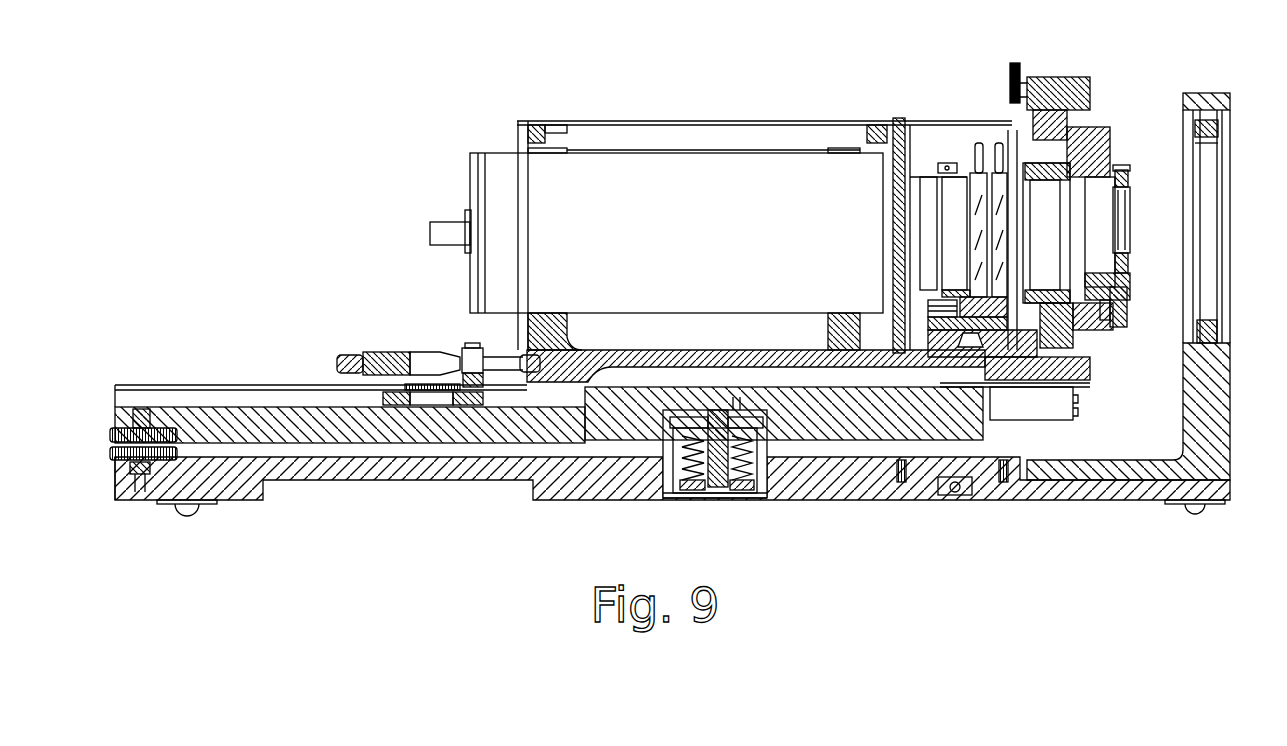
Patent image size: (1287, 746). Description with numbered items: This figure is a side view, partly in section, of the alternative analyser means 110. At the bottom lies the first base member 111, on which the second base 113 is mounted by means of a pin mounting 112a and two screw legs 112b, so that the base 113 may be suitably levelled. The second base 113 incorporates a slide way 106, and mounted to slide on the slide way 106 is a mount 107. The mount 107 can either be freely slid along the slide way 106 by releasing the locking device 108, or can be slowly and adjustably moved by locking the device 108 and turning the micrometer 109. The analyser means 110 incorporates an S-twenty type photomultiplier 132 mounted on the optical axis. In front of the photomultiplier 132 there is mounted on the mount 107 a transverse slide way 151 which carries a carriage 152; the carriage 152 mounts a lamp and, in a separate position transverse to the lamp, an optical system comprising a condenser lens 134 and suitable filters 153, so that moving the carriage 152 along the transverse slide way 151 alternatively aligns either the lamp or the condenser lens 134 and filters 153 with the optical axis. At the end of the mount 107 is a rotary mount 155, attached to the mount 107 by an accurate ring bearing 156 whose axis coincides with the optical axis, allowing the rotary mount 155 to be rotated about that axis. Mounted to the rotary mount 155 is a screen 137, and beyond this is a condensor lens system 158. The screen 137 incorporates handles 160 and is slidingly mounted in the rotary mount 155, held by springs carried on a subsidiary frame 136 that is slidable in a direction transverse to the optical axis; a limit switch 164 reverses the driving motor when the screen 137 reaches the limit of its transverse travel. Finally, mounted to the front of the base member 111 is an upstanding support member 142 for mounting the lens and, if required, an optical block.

The slide way 106 is at (181, 404).
The mount 107 is at (630, 362).
The locking device 108 is at (433, 384).
The micrometer 109 is at (377, 351).
The analyser means 110 is at (418, 267).
The first base member 111 is at (847, 487).
The pin mounting 112a is at (717, 487).
The screw legs 112b is at (122, 442).
The second base 113 is at (248, 418).
The photomultiplier 132 is at (697, 249).
The condenser lens 134 is at (920, 147).
The subsidiary frame 136 is at (1114, 310).
The screen 137 is at (1126, 247).
The upstanding support member 142 is at (1203, 414).
The transverse slide way 151 is at (990, 357).
The carriage 152 is at (928, 302).
The filters 153 is at (997, 143).
The rotary mount 155 is at (1116, 186).
The ring bearing 156 is at (1093, 123).
The condensor lens system 158 is at (1073, 78).
The handles 160 is at (1128, 186).
The limit switch 164 is at (1214, 341).